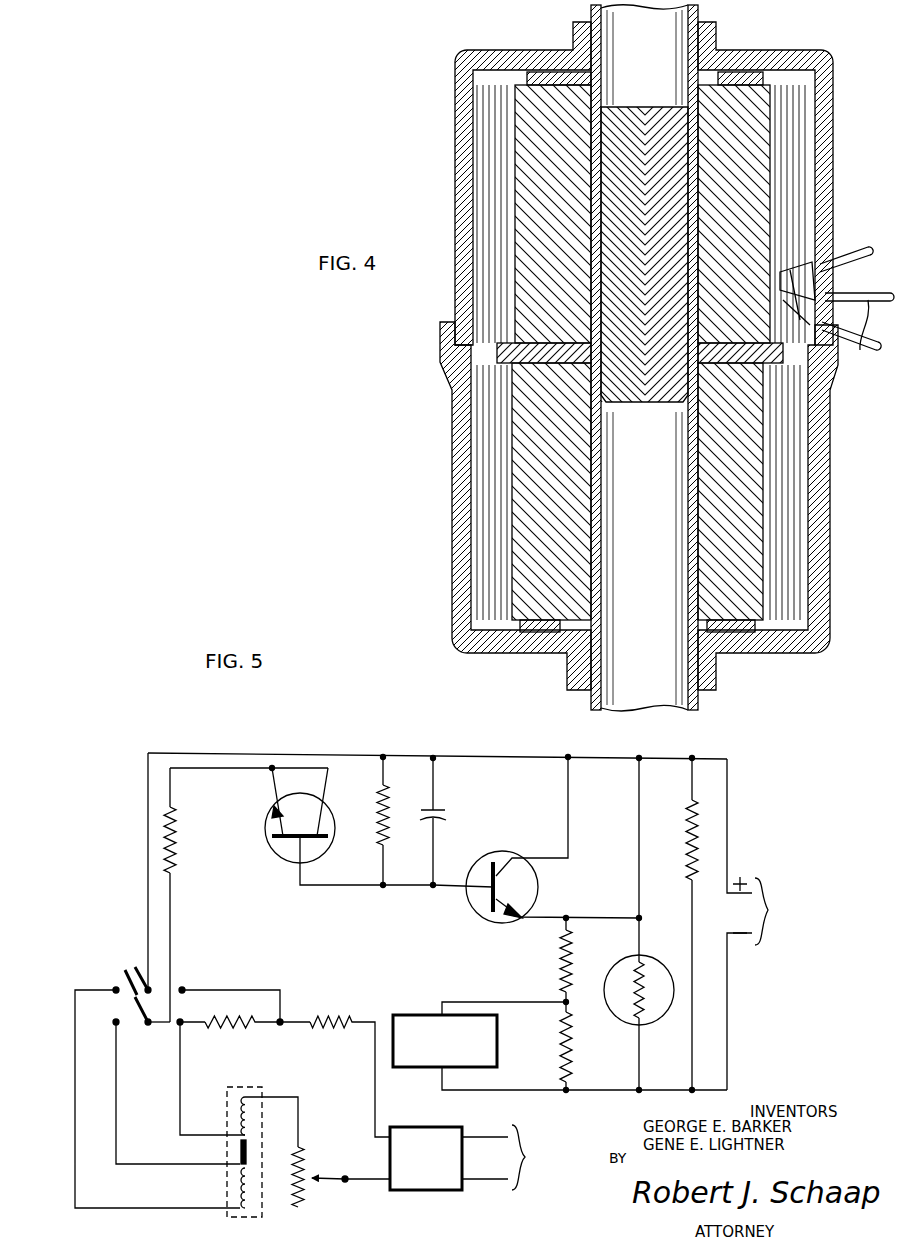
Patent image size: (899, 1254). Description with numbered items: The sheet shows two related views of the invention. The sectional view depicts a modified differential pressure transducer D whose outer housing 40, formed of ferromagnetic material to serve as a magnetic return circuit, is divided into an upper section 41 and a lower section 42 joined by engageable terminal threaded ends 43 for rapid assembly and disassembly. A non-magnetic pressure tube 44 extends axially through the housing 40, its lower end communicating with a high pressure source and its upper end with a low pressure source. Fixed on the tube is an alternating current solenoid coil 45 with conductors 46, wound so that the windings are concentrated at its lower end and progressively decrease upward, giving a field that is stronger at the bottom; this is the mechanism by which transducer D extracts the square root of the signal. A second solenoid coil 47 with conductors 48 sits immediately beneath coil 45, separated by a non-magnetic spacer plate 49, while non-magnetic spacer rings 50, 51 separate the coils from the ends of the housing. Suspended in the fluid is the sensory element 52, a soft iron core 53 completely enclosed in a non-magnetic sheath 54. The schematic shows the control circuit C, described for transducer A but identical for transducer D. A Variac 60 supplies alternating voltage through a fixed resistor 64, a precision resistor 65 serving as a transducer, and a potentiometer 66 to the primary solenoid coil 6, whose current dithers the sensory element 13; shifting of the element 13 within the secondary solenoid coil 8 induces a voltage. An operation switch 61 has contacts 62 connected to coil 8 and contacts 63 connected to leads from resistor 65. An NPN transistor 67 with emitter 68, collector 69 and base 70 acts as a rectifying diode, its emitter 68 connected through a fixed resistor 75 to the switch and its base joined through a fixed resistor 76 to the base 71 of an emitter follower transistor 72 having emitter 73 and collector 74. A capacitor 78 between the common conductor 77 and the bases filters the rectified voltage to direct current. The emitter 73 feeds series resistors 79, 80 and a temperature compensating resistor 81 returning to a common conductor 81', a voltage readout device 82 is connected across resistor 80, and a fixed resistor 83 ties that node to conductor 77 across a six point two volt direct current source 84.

In FIG. 4, the outer housing 40 is at (448, 584).
In FIG. 4, the upper section 41 is at (457, 132).
In FIG. 4, the lower section 42 is at (820, 522).
In FIG. 4, the terminal threaded ends 43 is at (828, 362).
In FIG. 4, the pressure tube 44 is at (700, 695).
In FIG. 4, the alternating current solenoid coil 45 is at (772, 142).
In FIG. 4, the conductors 46 is at (848, 322).
In FIG. 4, the second solenoid coil 47 is at (765, 556).
In FIG. 4, the conductors 48 is at (843, 266).
In FIG. 4, the non-magnetic spacer plate 49 is at (507, 338).
In FIG. 4, the non-magnetic spacer ring 50 is at (756, 72).
In FIG. 4, the non-magnetic spacer ring 51 is at (742, 642).
In FIG. 4, the sensory element 52 is at (636, 410).
In FIG. 4, the ferromagnetic core 53 is at (632, 176).
In FIG. 4, the non-magnetic sheath 54 is at (612, 408).
In FIG. 4, the differential pressure transducer D is at (611, 183).
In FIG. 5, the solenoid coil 6 is at (238, 1114).
In FIG. 5, the solenoid coil 8 is at (240, 1185).
In FIG. 5, the sensory element 13 is at (250, 1150).
In FIG. 5, the differential pressure transducer A is at (227, 1152).
In FIG. 5, the control circuit C is at (437, 848).
In FIG. 5, the Variac 60 is at (457, 1127).
In FIG. 5, the operation switch 61 is at (176, 1072).
In FIG. 5, the contacts 62 is at (115, 988).
In FIG. 5, the contacts 63 is at (184, 988).
In FIG. 5, the fixed resistor 64 is at (350, 1028).
In FIG. 5, the precision resistor 65 is at (250, 1028).
In FIG. 5, the potentiometer 66 is at (300, 1190).
In FIG. 5, the NPN transistor 67 is at (327, 843).
In FIG. 5, the emitter 68 is at (272, 838).
In FIG. 5, the collector 69 is at (322, 838).
In FIG. 5, the base 70 is at (298, 882).
In FIG. 5, the base 71 is at (452, 900).
In FIG. 5, the NPN transistor 72 is at (530, 857).
In FIG. 5, the emitter 73 is at (518, 918).
In FIG. 5, the collector 74 is at (503, 860).
In FIG. 5, the fixed resistor 75 is at (178, 868).
In FIG. 5, the fixed resistor 76 is at (386, 800).
In FIG. 5, the common conductor 77 is at (473, 756).
In FIG. 5, the capacitor 78 is at (445, 817).
In FIG. 5, the fixed resistor 79 is at (560, 947).
In FIG. 5, the fixed resistor 80 is at (560, 1062).
In FIG. 5, the temperature compensating resistor 81 is at (632, 924).
In FIG. 5, the common conductor 81' is at (646, 1069).
In FIG. 5, the voltage readout device 82 is at (420, 1015).
In FIG. 5, the fixed resistor 83 is at (688, 840).
In FIG. 5, the direct current source 84 is at (765, 900).